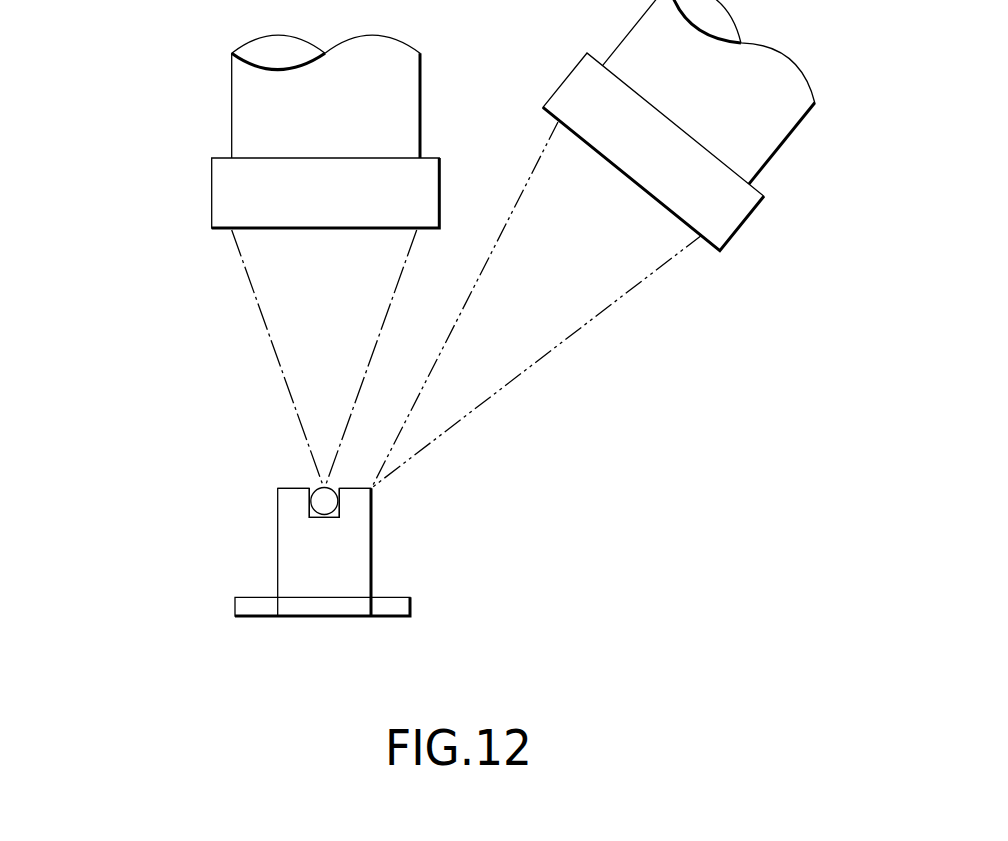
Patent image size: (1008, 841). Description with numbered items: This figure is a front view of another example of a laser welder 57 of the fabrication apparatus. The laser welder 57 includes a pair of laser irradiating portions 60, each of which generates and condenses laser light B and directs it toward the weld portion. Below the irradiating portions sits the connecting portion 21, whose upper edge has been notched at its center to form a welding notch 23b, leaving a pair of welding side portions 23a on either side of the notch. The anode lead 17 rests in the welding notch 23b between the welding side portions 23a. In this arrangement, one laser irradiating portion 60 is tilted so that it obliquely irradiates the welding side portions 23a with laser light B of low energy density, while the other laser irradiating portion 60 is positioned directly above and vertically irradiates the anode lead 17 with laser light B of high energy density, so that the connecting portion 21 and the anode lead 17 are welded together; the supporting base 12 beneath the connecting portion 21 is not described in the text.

The laser welder 57 is at (465, 352).
The laser irradiating portion 60 is at (232, 102).
The laser light B is at (268, 332).
The connecting portion 21 is at (325, 552).
The welding side portion 23a is at (288, 495).
The welding notch 23b is at (320, 515).
The anode lead 17 is at (323, 498).
The base 12 is at (382, 618).